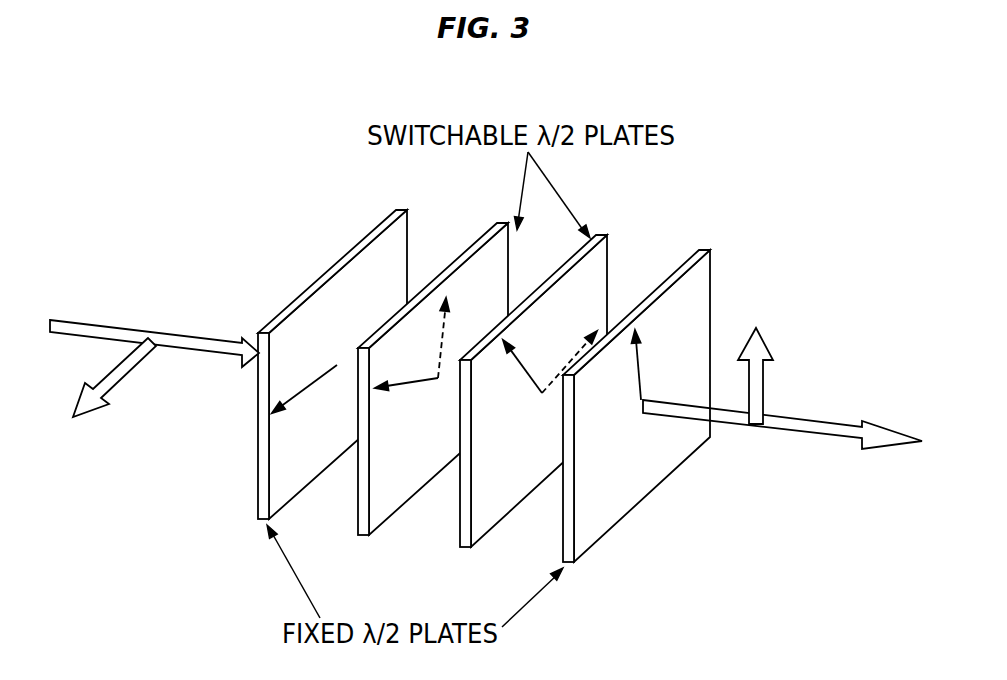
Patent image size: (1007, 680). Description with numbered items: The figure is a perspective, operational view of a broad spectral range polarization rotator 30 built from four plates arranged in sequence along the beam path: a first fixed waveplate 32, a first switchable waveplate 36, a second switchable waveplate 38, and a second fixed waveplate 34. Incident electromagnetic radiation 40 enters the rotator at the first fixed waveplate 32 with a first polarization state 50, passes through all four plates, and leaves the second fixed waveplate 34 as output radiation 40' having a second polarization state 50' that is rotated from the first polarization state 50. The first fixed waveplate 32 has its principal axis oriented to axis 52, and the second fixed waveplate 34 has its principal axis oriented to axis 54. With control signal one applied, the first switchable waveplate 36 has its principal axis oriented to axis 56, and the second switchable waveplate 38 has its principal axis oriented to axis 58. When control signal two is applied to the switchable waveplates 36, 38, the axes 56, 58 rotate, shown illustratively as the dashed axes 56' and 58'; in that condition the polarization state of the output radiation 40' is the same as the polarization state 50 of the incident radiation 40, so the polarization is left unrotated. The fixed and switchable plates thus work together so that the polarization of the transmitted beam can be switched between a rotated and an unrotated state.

The polarization rotator 30 is at (248, 143).
The first fixed waveplate 32 is at (257, 510).
The second fixed waveplate 34 is at (600, 525).
The first switchable waveplate 36 is at (397, 497).
The second switchable waveplate 38 is at (493, 515).
The incident electromagnetic radiation 40 is at (153, 318).
The output radiation 40' is at (782, 447).
The first polarization state 50 is at (126, 380).
The second polarization state 50' is at (782, 376).
The axis 52 is at (303, 392).
The axis 54 is at (640, 387).
The axis 56 is at (406, 409).
The rotated axis 56' is at (495, 314).
The axis 58 is at (512, 382).
The rotated axis 58' is at (599, 329).